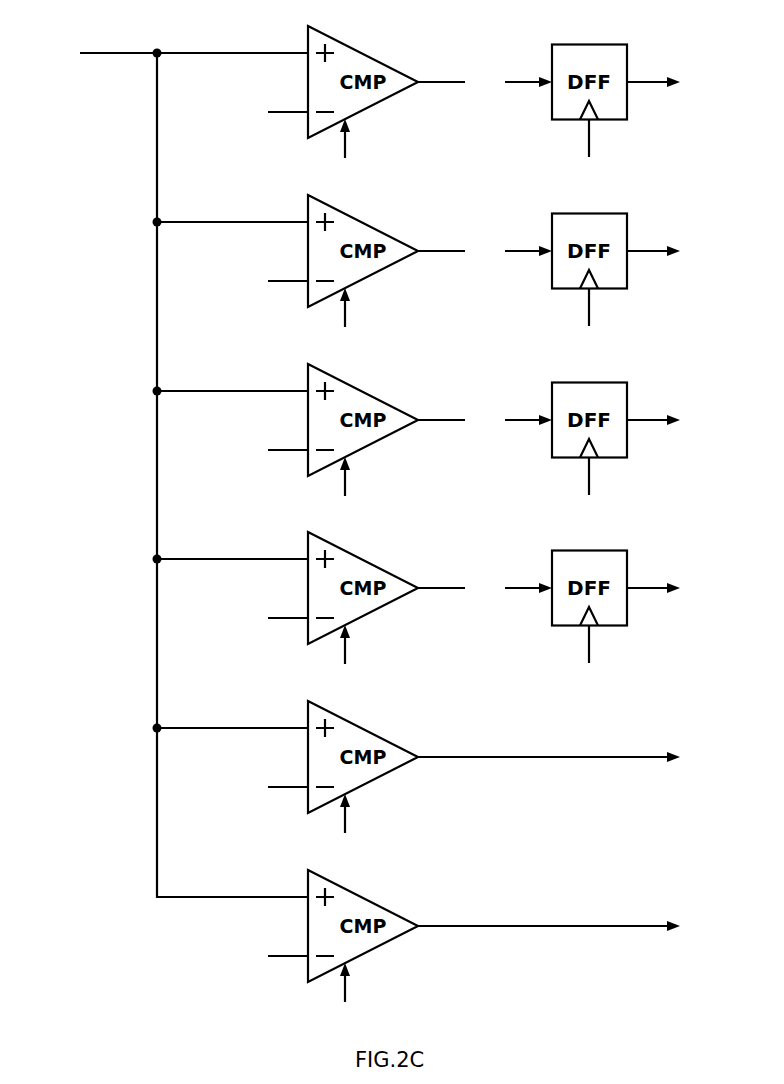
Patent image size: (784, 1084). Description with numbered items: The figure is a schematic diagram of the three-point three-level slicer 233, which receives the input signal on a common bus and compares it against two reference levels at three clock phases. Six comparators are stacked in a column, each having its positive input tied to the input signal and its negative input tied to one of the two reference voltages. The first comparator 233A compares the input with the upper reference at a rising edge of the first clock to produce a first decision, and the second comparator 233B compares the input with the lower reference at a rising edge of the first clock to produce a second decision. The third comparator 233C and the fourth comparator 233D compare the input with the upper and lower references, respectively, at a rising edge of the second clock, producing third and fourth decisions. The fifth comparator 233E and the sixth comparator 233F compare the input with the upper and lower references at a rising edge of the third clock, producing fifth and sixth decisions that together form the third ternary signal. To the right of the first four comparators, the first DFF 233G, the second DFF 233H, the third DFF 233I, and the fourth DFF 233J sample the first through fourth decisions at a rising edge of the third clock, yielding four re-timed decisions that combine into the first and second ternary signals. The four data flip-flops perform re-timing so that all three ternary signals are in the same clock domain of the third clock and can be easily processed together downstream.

The 3-point 3-level slicer 233 is at (100, 958).
The first comparator 233A is at (360, 92).
The second comparator 233B is at (360, 261).
The third comparator 233C is at (360, 430).
The fourth comparator 233D is at (361, 598).
The fifth comparator 233E is at (359, 767).
The sixth comparator 233F is at (359, 936).
The first DFF 233G is at (593, 89).
The second DFF 233H is at (592, 258).
The third DFF 233I is at (592, 427).
The fourth DFF 233J is at (592, 595).